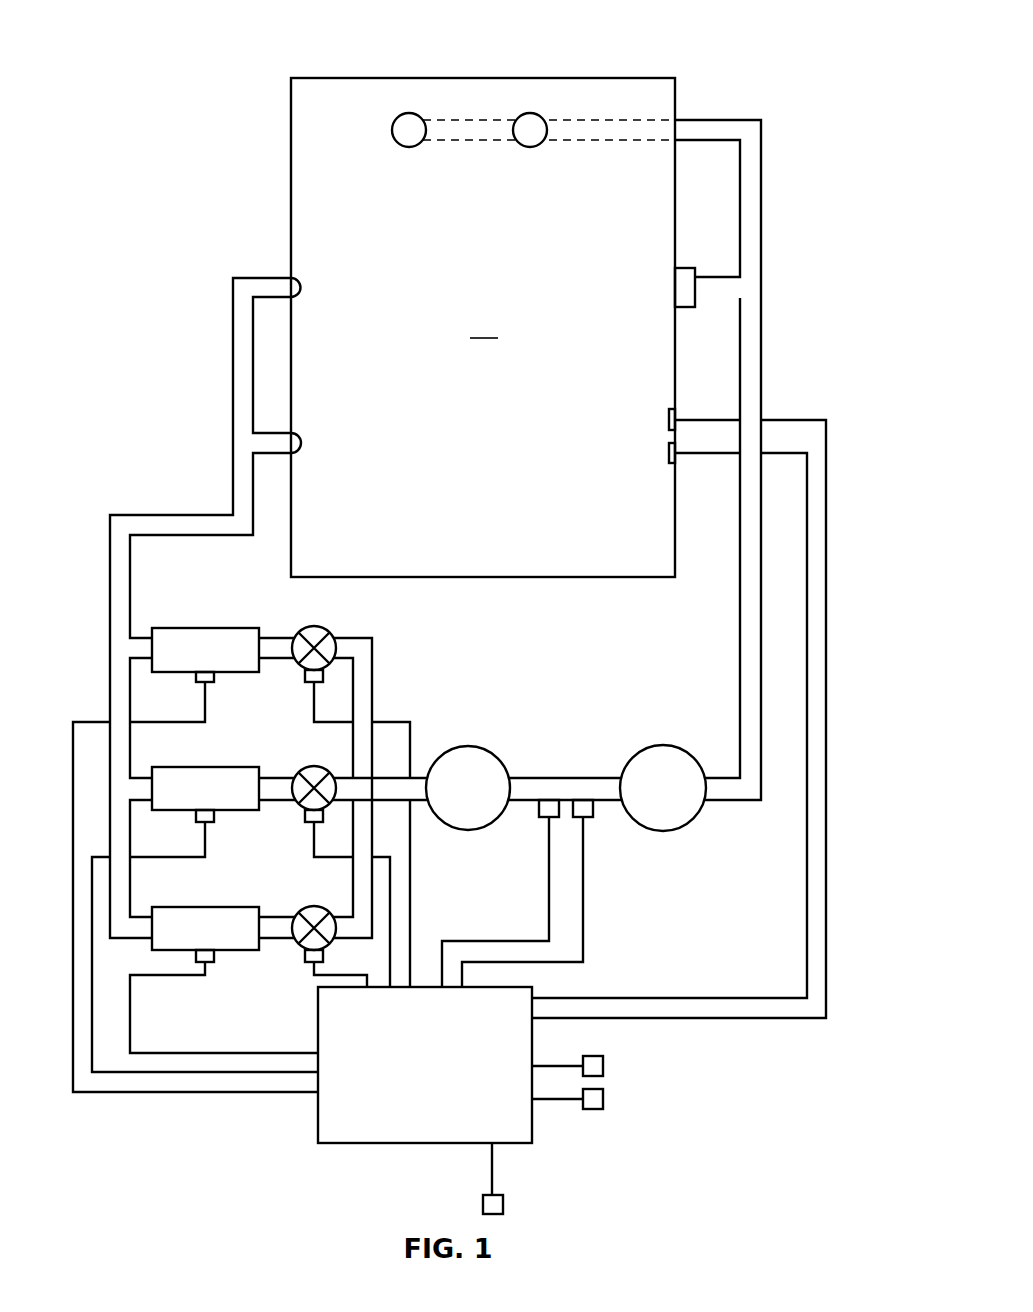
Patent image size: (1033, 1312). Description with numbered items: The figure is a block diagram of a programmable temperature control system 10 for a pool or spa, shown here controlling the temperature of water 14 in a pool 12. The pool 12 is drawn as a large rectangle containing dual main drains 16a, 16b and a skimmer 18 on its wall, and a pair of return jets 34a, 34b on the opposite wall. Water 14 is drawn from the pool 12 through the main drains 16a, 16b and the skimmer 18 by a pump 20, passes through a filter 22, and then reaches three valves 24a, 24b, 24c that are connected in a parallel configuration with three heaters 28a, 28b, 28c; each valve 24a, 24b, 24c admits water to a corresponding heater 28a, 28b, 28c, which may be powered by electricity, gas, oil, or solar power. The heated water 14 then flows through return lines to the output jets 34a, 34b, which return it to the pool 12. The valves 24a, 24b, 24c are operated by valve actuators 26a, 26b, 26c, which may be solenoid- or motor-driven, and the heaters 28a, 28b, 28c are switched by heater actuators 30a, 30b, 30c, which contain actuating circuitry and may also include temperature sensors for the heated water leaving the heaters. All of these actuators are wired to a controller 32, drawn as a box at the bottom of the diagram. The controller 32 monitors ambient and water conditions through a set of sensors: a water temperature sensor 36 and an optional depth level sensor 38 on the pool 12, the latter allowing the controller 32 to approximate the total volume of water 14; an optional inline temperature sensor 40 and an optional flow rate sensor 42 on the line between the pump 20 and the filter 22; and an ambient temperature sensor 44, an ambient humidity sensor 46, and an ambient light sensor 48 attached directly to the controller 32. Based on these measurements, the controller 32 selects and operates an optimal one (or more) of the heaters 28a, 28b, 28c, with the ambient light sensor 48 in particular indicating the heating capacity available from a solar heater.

The programmable temperature control system 10 is at (108, 1118).
The pool 12 is at (302, 52).
The water 14 is at (483, 326).
The main drain 16a is at (405, 113).
The main drain 16b is at (527, 113).
The skimmer 18 is at (675, 290).
The pump 20 is at (663, 745).
The filter 22 is at (468, 745).
The valve 24a is at (311, 625).
The valve 24b is at (312, 765).
The valve 24c is at (312, 905).
The valve actuator 26a is at (303, 678).
The valve actuator 26b is at (303, 818).
The valve actuator 26c is at (303, 958).
The heater 28a is at (220, 628).
The heater 28b is at (220, 767).
The heater 28c is at (220, 907).
The heater actuator 30a is at (208, 684).
The heater actuator 30b is at (208, 824).
The heater actuator 30c is at (208, 964).
The controller 32 is at (370, 1143).
The return jet 34a is at (295, 278).
The return jet 34b is at (295, 433).
The water temperature sensor 36 is at (668, 418).
The depth level sensor 38 is at (668, 452).
The inline temperature sensor 40 is at (586, 820).
The flow rate sensor 42 is at (546, 820).
The ambient temperature sensor 44 is at (605, 1066).
The ambient humidity sensor 46 is at (605, 1099).
The ambient light sensor 48 is at (505, 1205).